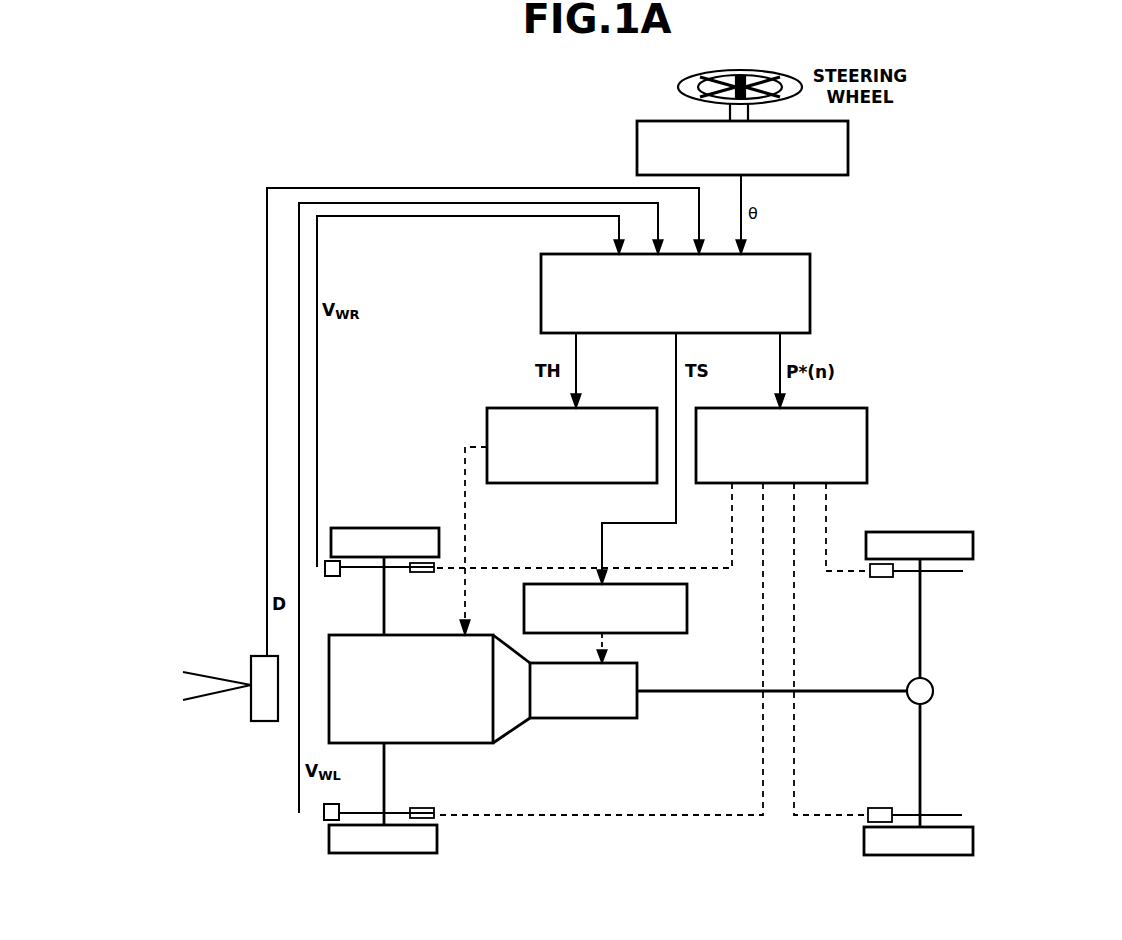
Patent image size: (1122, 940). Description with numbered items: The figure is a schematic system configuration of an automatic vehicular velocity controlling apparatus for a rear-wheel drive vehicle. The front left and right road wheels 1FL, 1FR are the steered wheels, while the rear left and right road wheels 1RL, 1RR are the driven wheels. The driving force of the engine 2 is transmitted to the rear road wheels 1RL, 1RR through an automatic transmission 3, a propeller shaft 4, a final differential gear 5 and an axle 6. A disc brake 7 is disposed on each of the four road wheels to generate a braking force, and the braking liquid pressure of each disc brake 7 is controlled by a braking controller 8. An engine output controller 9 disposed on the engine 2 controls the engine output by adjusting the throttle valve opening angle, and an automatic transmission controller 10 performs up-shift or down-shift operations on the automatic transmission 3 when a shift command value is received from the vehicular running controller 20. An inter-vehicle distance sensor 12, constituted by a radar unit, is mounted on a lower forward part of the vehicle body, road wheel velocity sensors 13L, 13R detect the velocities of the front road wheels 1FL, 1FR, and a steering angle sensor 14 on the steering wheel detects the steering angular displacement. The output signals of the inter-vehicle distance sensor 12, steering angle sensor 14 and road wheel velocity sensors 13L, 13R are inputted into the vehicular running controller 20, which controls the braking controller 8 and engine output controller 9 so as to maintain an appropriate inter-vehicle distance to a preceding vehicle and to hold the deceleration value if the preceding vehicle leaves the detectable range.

The steering angle sensor 14 is at (848, 142).
The vehicular running controller 20 is at (810, 292).
The engine output controller 9 is at (487, 417).
The braking controller 8 is at (867, 430).
The automatic transmission controller 10 is at (660, 633).
The engine 2 is at (471, 743).
The automatic transmission 3 is at (596, 718).
The propeller shaft 4 is at (830, 690).
The final differential gear 5 is at (933, 690).
The axle 6 is at (920, 662).
The disc brake 7 is at (404, 574).
The inter-vehicle distance sensor 12 is at (265, 721).
The road wheel velocity sensor 13R is at (333, 577).
The road wheel velocity sensor 13L is at (324, 820).
The front right road wheel 1FR is at (358, 528).
The front left road wheel 1FL is at (428, 853).
The rear right road wheel 1RR is at (928, 532).
The rear left road wheel 1RL is at (920, 855).